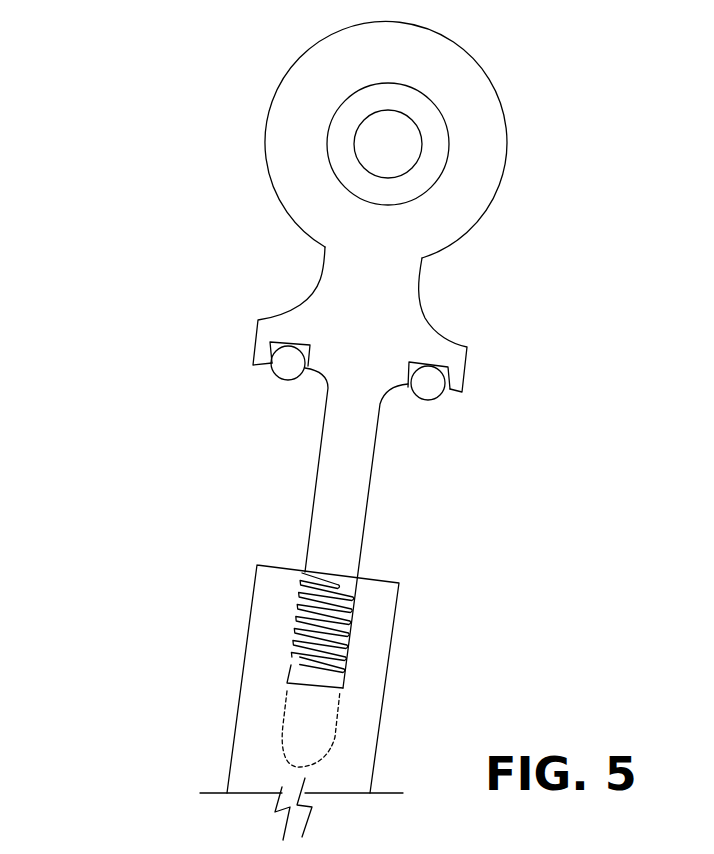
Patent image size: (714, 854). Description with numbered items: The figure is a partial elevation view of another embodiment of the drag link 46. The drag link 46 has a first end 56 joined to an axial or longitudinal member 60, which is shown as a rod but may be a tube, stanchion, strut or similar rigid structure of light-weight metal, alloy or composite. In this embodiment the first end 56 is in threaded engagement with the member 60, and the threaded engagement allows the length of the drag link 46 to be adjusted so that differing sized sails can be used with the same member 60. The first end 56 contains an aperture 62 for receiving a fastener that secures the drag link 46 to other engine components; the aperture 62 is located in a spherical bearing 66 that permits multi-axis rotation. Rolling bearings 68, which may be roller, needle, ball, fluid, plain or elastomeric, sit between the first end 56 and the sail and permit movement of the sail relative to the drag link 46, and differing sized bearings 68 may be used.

The drag link 46 is at (150, 413).
The first end 56 is at (490, 205).
The aperture 62 is at (395, 157).
The spherical bearing 66 is at (408, 102).
The rolling bearings 68 is at (427, 385).
The member 60 is at (383, 695).